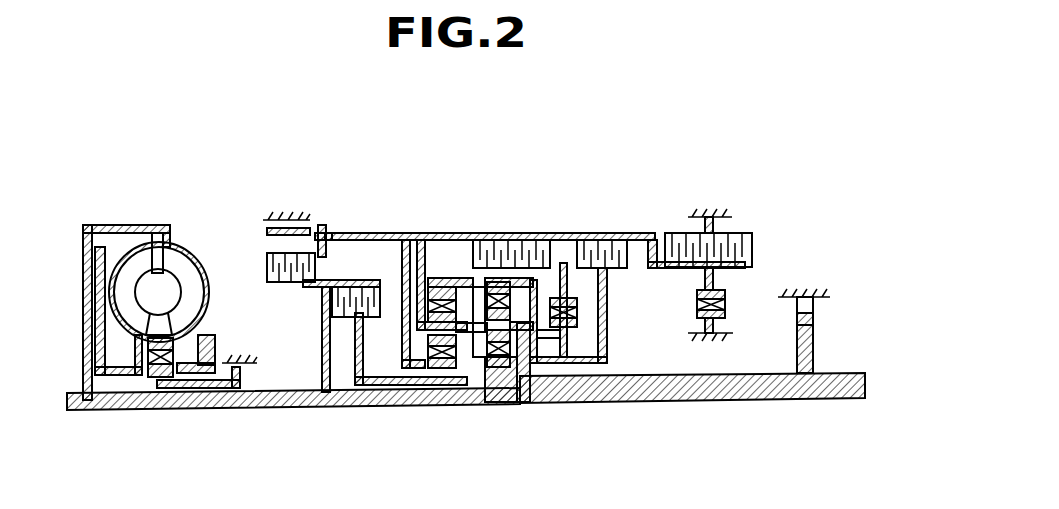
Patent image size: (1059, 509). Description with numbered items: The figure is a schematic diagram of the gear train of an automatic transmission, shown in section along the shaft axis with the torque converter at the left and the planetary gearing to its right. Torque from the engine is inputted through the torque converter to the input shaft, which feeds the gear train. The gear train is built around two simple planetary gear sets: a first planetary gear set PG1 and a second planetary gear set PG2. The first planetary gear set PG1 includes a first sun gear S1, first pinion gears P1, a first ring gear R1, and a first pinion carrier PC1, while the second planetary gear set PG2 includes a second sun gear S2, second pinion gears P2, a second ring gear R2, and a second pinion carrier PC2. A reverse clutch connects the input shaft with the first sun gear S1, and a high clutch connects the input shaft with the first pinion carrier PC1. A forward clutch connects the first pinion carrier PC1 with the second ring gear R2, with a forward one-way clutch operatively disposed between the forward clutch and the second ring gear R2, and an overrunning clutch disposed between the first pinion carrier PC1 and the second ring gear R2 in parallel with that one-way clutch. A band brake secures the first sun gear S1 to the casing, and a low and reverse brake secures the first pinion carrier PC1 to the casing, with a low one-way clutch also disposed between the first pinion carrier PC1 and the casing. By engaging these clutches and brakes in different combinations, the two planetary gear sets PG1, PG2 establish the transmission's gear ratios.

The first ring gear R1 is at (440, 284).
The second ring gear R2 is at (468, 278).
The second planetary gear set PG2 is at (560, 240).
The first planetary gear set PG1 is at (416, 343).
The first sun gear S1 is at (445, 365).
The first pinion gears P1 is at (443, 372).
The first pinion carrier PC1 is at (490, 380).
The second sun gear S2 is at (500, 372).
The second pinion gears P2 is at (519, 380).
The second pinion carrier PC2 is at (540, 370).